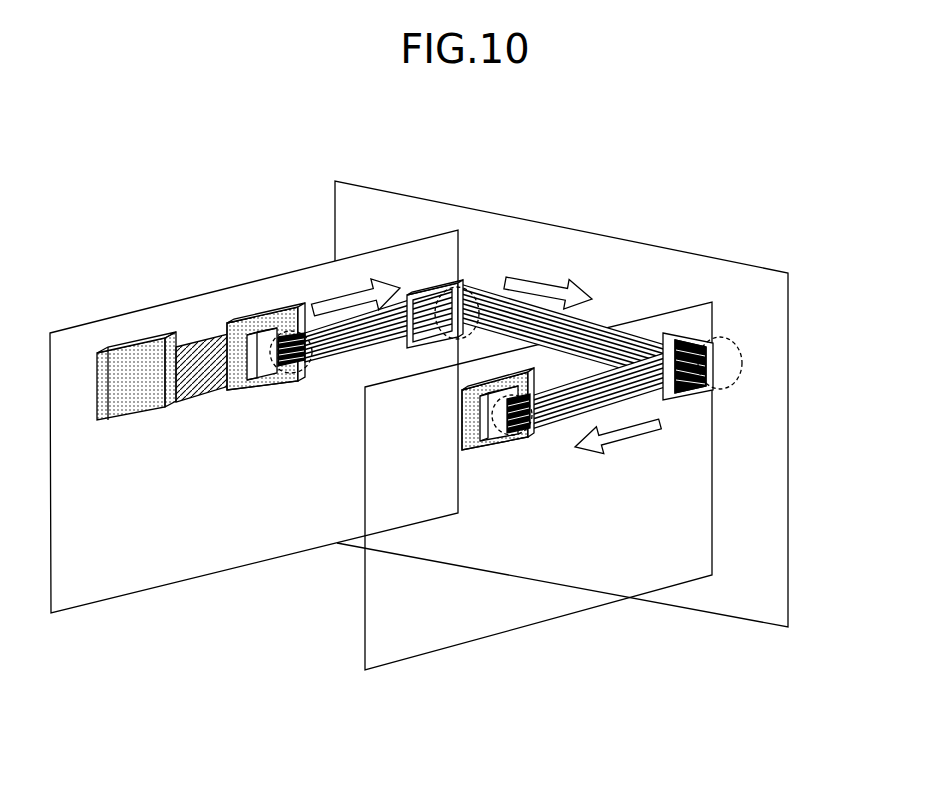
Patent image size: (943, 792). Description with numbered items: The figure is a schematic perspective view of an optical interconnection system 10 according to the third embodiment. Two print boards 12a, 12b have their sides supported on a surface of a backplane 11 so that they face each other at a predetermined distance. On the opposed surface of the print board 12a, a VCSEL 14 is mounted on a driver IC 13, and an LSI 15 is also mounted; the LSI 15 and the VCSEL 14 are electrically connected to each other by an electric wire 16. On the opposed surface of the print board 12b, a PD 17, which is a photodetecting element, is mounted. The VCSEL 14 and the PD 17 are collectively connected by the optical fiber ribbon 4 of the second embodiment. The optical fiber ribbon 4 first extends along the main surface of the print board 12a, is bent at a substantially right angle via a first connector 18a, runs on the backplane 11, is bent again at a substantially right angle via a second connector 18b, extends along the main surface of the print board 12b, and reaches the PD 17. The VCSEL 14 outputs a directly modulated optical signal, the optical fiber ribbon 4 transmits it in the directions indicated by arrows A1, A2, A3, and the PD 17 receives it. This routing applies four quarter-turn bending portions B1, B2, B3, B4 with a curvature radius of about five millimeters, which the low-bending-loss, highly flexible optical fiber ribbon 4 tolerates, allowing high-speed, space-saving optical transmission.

The optical interconnection system 10 is at (460, 163).
The backplane 11 is at (600, 273).
The print board 12a is at (182, 562).
The print board 12b is at (462, 625).
The driver IC 13 is at (240, 323).
The VCSEL 14 is at (275, 315).
The LSI 15 is at (128, 347).
The electric wire 16 is at (190, 343).
The PD 17 is at (473, 448).
The first connector 18a is at (430, 293).
The second connector 18b is at (687, 333).
The optical fiber ribbon 4 is at (341, 316).
The arrow A1 is at (365, 297).
The arrow A2 is at (547, 282).
The arrow A3 is at (635, 443).
The bending portion B1 is at (300, 375).
The bending portion B2 is at (465, 297).
The bending portion B3 is at (727, 333).
The bending portion B4 is at (520, 437).